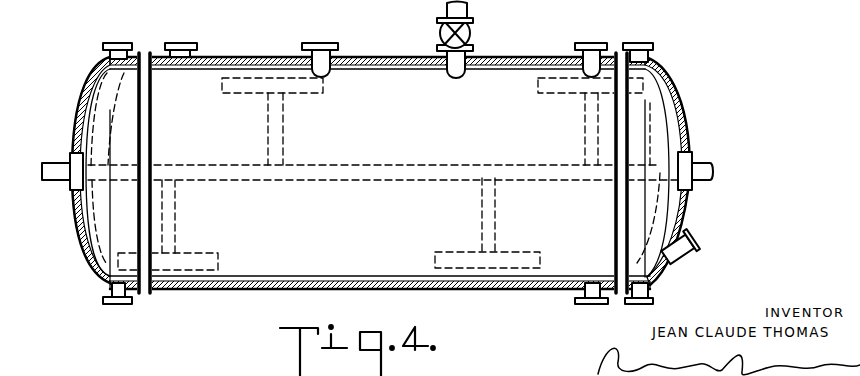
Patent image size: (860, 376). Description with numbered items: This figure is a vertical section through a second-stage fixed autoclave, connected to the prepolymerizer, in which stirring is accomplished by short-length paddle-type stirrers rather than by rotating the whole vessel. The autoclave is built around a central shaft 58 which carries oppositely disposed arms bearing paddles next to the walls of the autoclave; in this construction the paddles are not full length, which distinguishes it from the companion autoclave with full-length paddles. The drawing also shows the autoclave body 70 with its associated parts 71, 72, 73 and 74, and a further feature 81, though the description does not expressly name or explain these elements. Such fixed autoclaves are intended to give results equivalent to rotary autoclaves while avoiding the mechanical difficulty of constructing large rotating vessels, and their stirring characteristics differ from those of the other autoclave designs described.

The central shaft 58 is at (707, 163).
The cylindrical shell 70 is at (367, 260).
The inner lining 71 is at (185, 292).
The baffle 72 is at (537, 67).
The end head 73 is at (76, 121).
The drain nozzle 74 is at (677, 265).
The inlet nozzle 81 is at (317, 38).